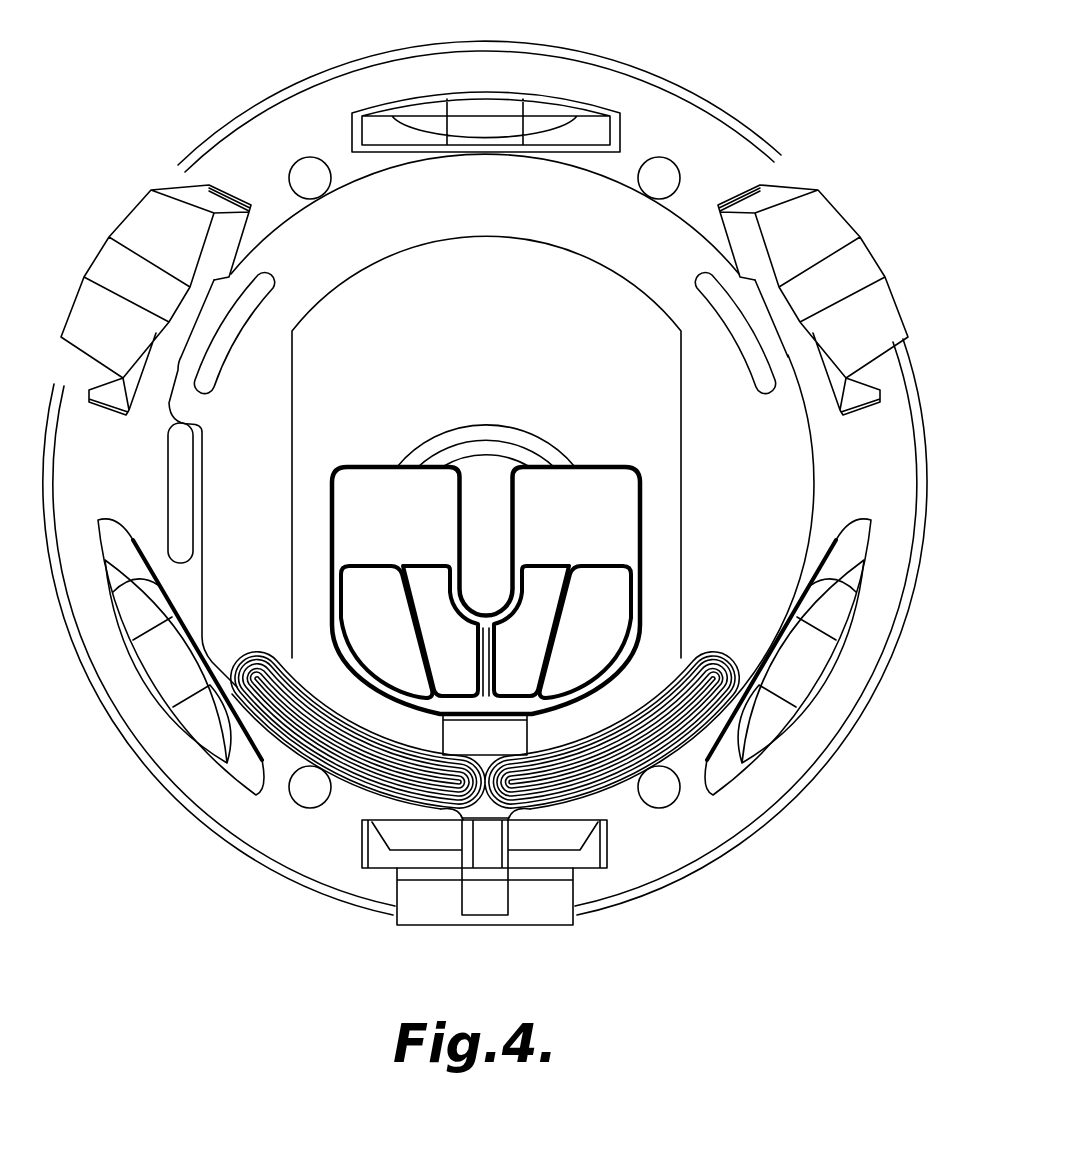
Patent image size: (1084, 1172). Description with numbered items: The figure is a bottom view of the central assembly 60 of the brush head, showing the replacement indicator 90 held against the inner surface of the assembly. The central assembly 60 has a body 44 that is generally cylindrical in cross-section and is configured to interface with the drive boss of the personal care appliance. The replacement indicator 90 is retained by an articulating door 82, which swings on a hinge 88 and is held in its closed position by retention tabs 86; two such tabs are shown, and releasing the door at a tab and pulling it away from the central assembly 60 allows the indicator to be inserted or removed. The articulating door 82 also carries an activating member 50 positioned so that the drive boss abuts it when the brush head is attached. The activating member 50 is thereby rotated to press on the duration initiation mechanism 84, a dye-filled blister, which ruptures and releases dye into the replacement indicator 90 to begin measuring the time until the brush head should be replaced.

The body 44 is at (642, 74).
The central assembly 60 is at (779, 67).
The replacement indicator 90 is at (415, 280).
The articulating door 82 is at (783, 473).
The retention tabs 86 is at (212, 297).
The duration initiation mechanism 84 is at (497, 467).
The activating member 50 is at (620, 533).
The hinge 88 is at (527, 813).